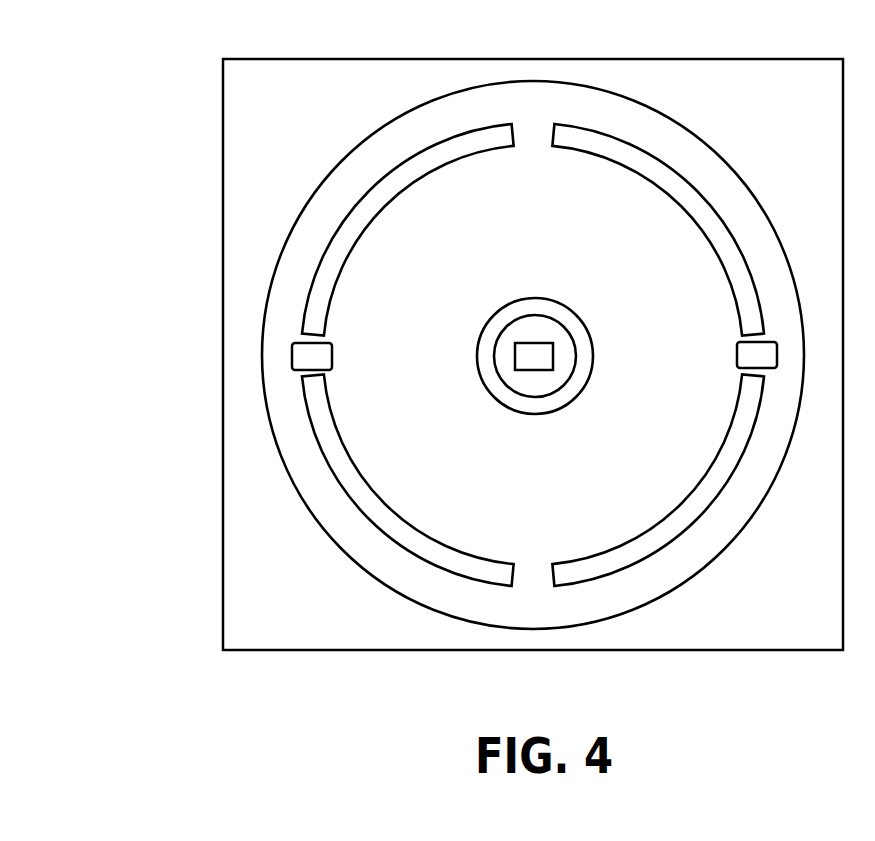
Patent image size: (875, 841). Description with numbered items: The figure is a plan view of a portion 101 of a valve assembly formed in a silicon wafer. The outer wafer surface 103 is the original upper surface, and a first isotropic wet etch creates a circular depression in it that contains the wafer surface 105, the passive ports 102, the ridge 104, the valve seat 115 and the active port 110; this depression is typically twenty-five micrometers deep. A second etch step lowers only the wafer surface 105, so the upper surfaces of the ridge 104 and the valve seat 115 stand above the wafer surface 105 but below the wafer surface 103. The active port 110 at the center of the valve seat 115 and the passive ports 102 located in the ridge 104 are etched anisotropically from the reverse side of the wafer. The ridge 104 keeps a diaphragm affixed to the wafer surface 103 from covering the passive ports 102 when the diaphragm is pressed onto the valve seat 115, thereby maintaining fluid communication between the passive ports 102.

The portion of valve assembly 101 is at (178, 45).
The passive ports 102 is at (332, 357).
The wafer surface 103 is at (319, 133).
The ridge 104 is at (735, 267).
The wafer surface 105 is at (489, 227).
The active port 110 is at (548, 367).
The valve seat 115 is at (535, 298).